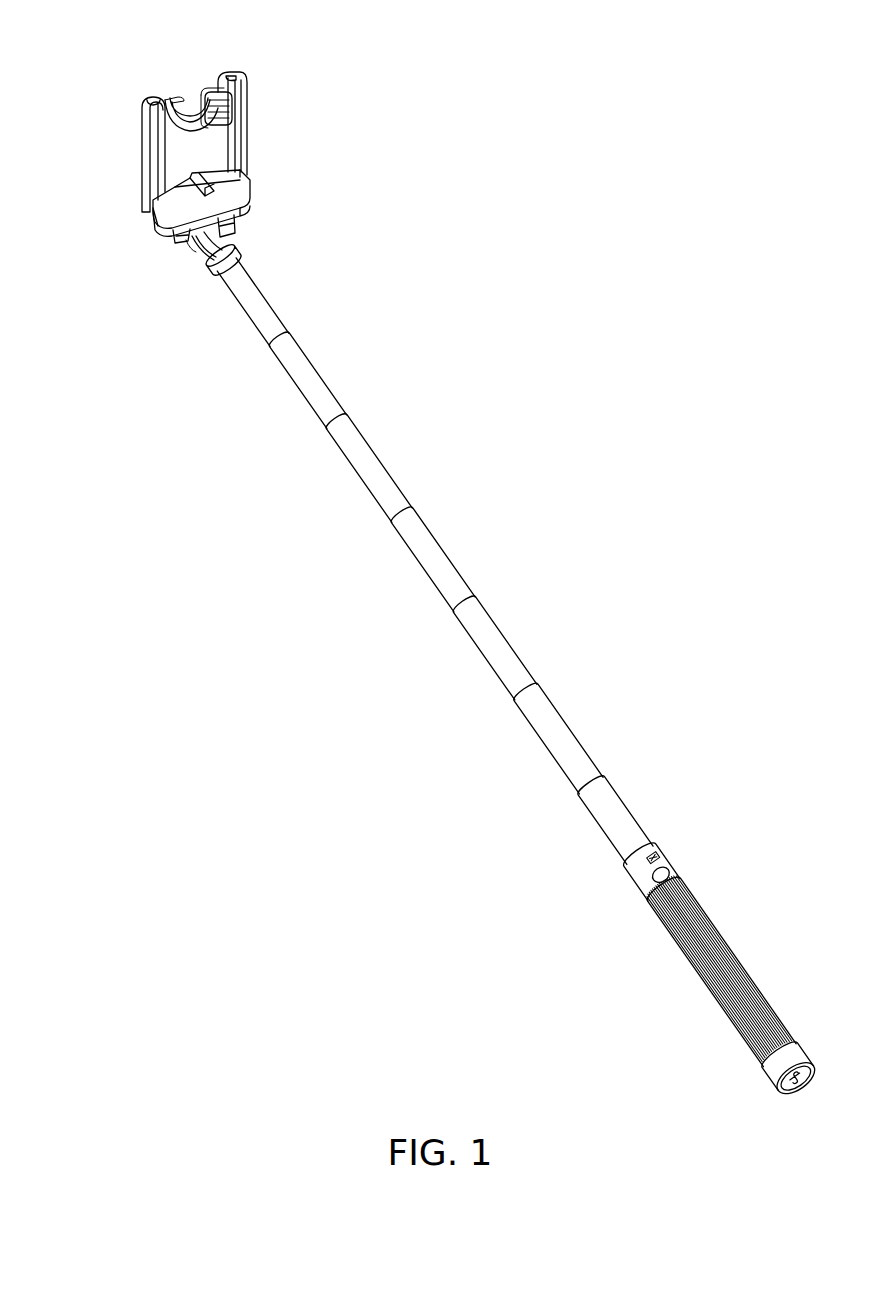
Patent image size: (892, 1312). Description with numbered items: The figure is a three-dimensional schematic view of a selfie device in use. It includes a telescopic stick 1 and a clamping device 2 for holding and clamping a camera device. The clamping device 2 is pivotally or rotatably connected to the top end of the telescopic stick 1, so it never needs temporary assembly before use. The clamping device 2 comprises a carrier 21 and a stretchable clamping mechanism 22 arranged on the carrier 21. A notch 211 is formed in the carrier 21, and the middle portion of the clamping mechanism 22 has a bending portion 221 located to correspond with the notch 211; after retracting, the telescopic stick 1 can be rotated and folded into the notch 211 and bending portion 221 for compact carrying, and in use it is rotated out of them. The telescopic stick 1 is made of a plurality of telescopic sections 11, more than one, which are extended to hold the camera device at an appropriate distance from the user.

The telescopic stick 1 is at (537, 647).
The telescopic sections 11 is at (366, 466).
The clamping device 2 is at (346, 163).
The carrier 21 is at (185, 207).
The notch 211 is at (188, 183).
The clamping mechanism 22 is at (230, 100).
The bending portion 221 is at (192, 113).